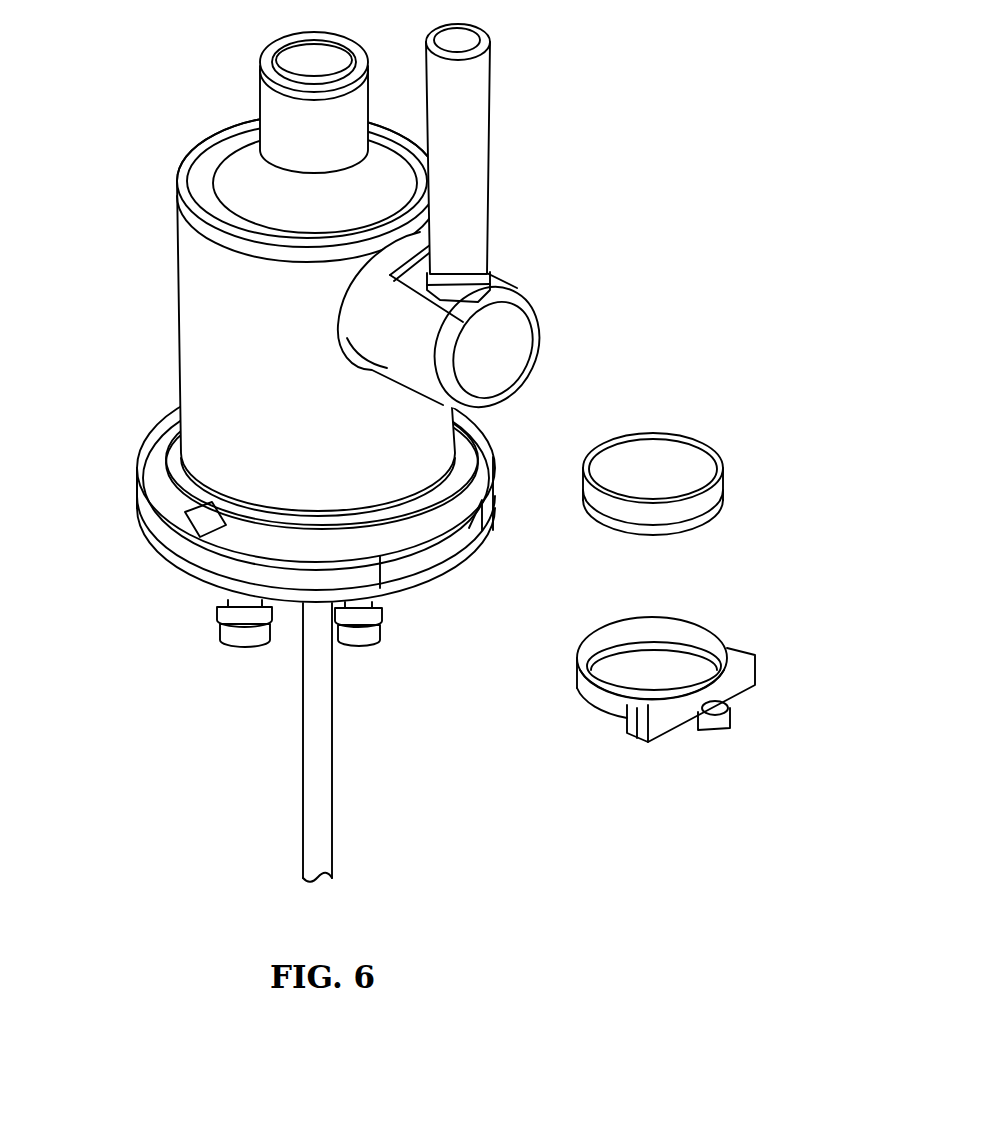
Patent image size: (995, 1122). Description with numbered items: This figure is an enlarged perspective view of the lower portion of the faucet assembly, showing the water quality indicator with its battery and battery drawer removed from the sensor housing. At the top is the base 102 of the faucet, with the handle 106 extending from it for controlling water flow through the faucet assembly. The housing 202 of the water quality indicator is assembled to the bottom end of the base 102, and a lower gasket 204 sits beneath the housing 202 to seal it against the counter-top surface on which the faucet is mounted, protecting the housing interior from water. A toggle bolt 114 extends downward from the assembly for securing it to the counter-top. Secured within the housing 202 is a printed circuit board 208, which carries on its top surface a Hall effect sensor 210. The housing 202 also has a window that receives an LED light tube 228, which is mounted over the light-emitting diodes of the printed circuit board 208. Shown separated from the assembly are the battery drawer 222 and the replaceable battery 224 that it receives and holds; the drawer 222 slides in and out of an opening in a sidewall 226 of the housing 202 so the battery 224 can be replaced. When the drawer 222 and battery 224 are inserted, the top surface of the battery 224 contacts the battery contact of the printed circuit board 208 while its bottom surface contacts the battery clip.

The base 102 is at (195, 296).
The handle 106 is at (477, 186).
The toggle bolt 114 is at (323, 847).
The housing 202 is at (209, 568).
The lower gasket 204 is at (422, 588).
The printed circuit board 208 is at (250, 652).
The Hall effect sensor 210 is at (363, 648).
The battery drawer 222 is at (735, 685).
The battery 224 is at (727, 502).
The sidewall 226 is at (143, 517).
The LED light tube 228 is at (207, 520).